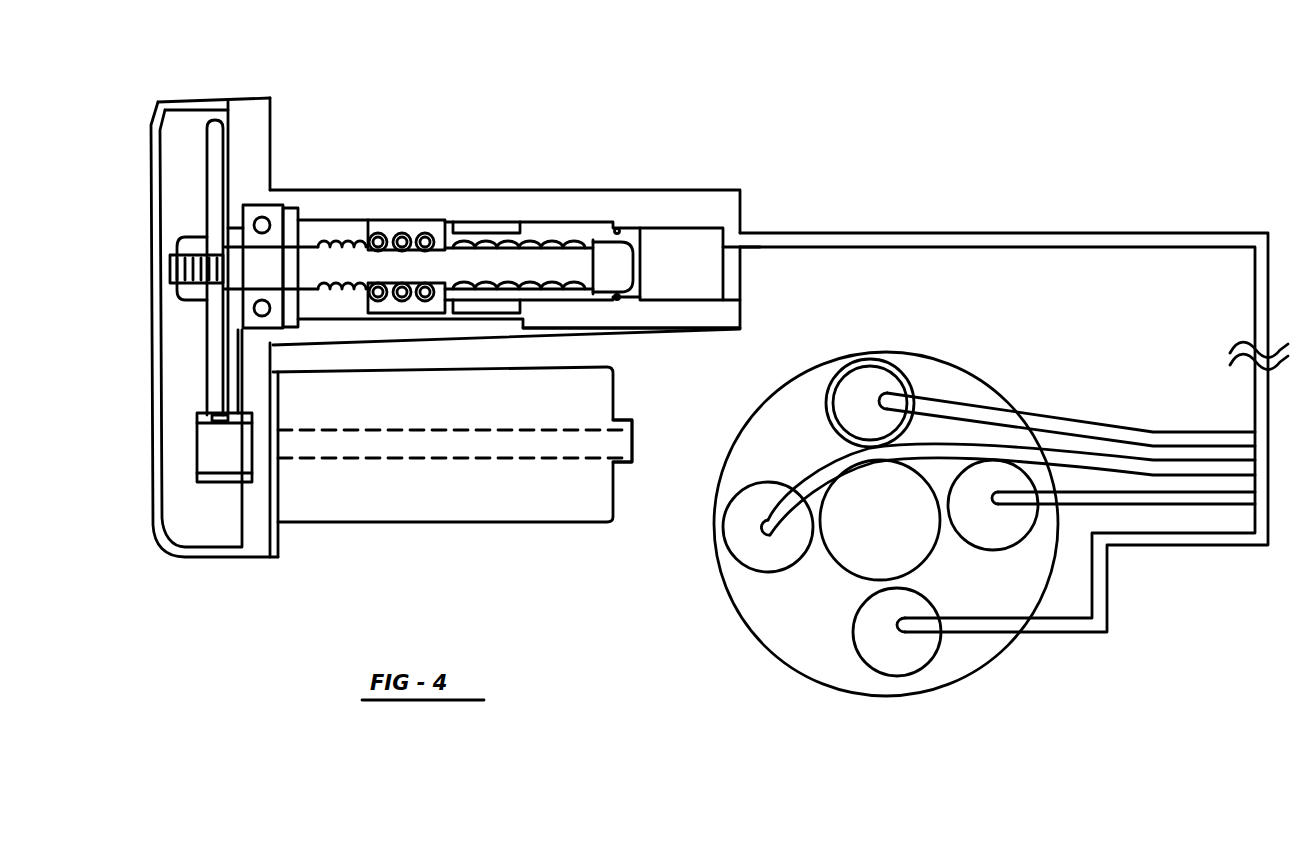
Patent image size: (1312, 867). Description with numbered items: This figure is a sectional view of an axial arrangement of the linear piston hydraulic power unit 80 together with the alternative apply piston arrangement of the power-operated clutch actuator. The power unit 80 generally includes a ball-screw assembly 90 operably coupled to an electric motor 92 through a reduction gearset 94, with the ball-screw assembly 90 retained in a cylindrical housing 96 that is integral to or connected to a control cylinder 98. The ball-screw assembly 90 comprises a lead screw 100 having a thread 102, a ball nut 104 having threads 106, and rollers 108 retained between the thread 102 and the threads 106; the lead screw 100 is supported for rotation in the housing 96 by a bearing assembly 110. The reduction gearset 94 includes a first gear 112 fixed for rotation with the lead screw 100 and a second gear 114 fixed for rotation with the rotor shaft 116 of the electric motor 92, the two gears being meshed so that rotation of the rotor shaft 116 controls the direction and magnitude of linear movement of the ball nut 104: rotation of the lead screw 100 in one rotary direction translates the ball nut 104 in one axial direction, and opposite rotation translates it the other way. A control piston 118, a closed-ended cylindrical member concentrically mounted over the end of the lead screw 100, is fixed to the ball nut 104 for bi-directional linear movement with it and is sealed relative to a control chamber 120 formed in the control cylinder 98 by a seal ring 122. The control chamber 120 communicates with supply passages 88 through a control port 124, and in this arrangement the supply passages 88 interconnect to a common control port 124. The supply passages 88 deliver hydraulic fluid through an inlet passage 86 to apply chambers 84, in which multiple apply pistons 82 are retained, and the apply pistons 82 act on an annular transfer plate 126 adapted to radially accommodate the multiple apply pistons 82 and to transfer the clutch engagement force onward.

The linear piston hydraulic power unit 80 is at (146, 352).
The apply piston 82 is at (905, 382).
The apply chamber 84 is at (875, 385).
The inlet passage 86 is at (980, 400).
The supply passage 88 is at (857, 238).
The ball-screw assembly 90 is at (757, 268).
The electric motor 92 is at (472, 487).
The reduction gearset 94 is at (212, 385).
The cylindrical housing 96 is at (723, 315).
The control cylinder 98 is at (645, 210).
The lead screw 100 is at (600, 207).
The thread 102 is at (542, 246).
The ball nut 104 is at (372, 228).
The threads 106 is at (407, 236).
The rollers 108 is at (513, 238).
The bearing assembly 110 is at (273, 212).
The first gear 112 is at (210, 158).
The second gear 114 is at (212, 467).
The rotor shaft 116 is at (625, 430).
The control piston 118 is at (700, 228).
The control chamber 120 is at (692, 242).
The seal ring 122 is at (623, 298).
The control port 124 is at (733, 240).
The transfer plate 126 is at (985, 402).